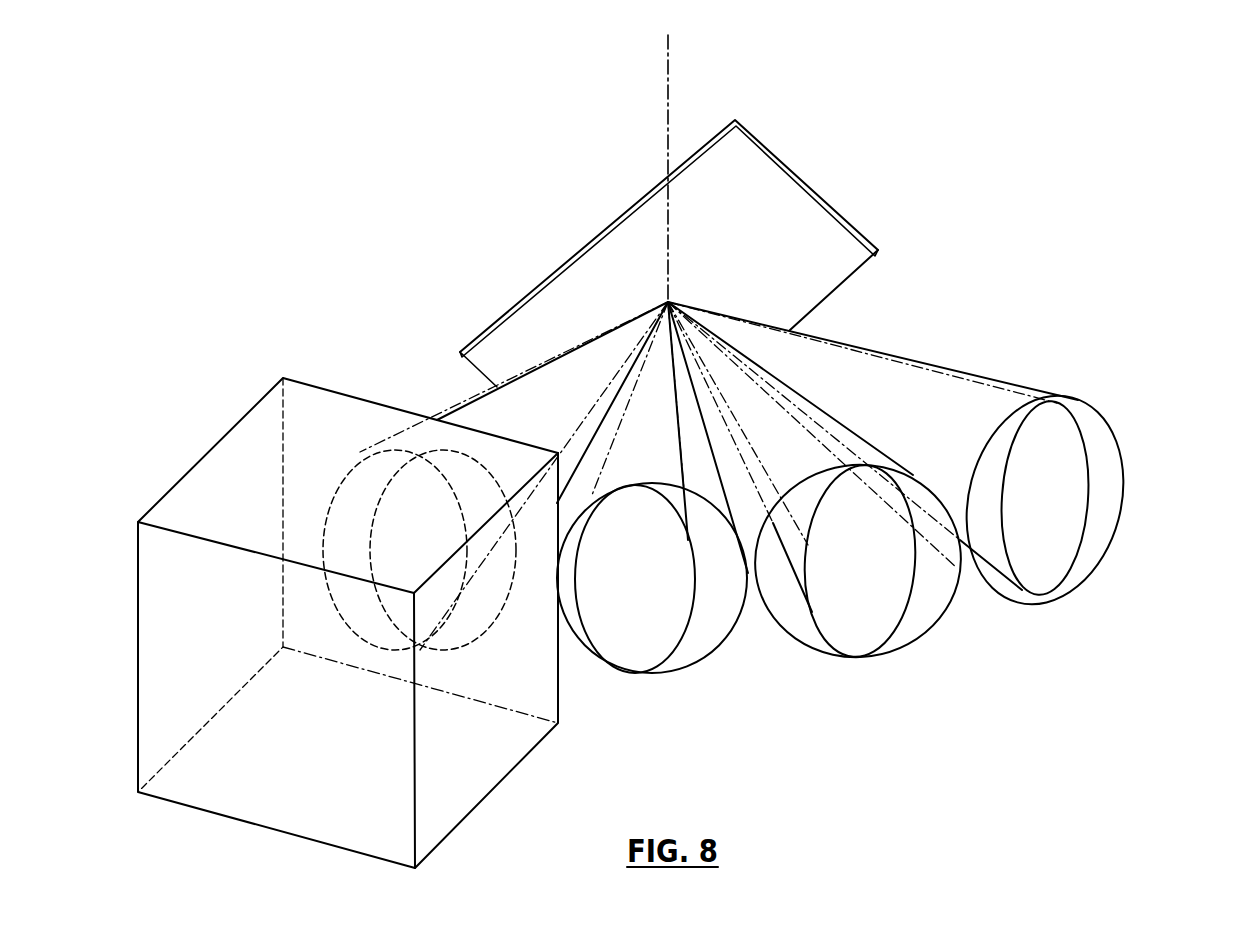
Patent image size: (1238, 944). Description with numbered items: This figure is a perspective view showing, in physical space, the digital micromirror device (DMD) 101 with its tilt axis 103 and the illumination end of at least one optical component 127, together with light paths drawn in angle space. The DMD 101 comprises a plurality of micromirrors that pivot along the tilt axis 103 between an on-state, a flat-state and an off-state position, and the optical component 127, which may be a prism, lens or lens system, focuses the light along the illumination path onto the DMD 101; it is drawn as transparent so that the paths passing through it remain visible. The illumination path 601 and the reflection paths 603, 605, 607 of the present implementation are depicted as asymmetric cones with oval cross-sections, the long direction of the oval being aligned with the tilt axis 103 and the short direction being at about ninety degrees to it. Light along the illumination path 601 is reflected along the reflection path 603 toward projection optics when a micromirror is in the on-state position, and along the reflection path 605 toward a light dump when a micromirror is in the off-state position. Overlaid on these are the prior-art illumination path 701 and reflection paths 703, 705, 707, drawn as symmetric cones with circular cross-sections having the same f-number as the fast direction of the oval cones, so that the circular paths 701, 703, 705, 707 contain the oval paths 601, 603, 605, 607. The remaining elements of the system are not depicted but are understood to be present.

The digital micromirror device (DMD) 101 is at (798, 272).
The tilt axis 103 is at (668, 85).
The optical component 127 is at (238, 511).
The illumination path 601 is at (383, 473).
The reflection path 603 is at (613, 635).
The reflection path 605 is at (1050, 563).
The reflection path 607 is at (855, 630).
The illumination path 701 is at (338, 487).
The reflection path 703 is at (713, 652).
The reflection path 705 is at (1098, 422).
The reflection path 707 is at (793, 650).